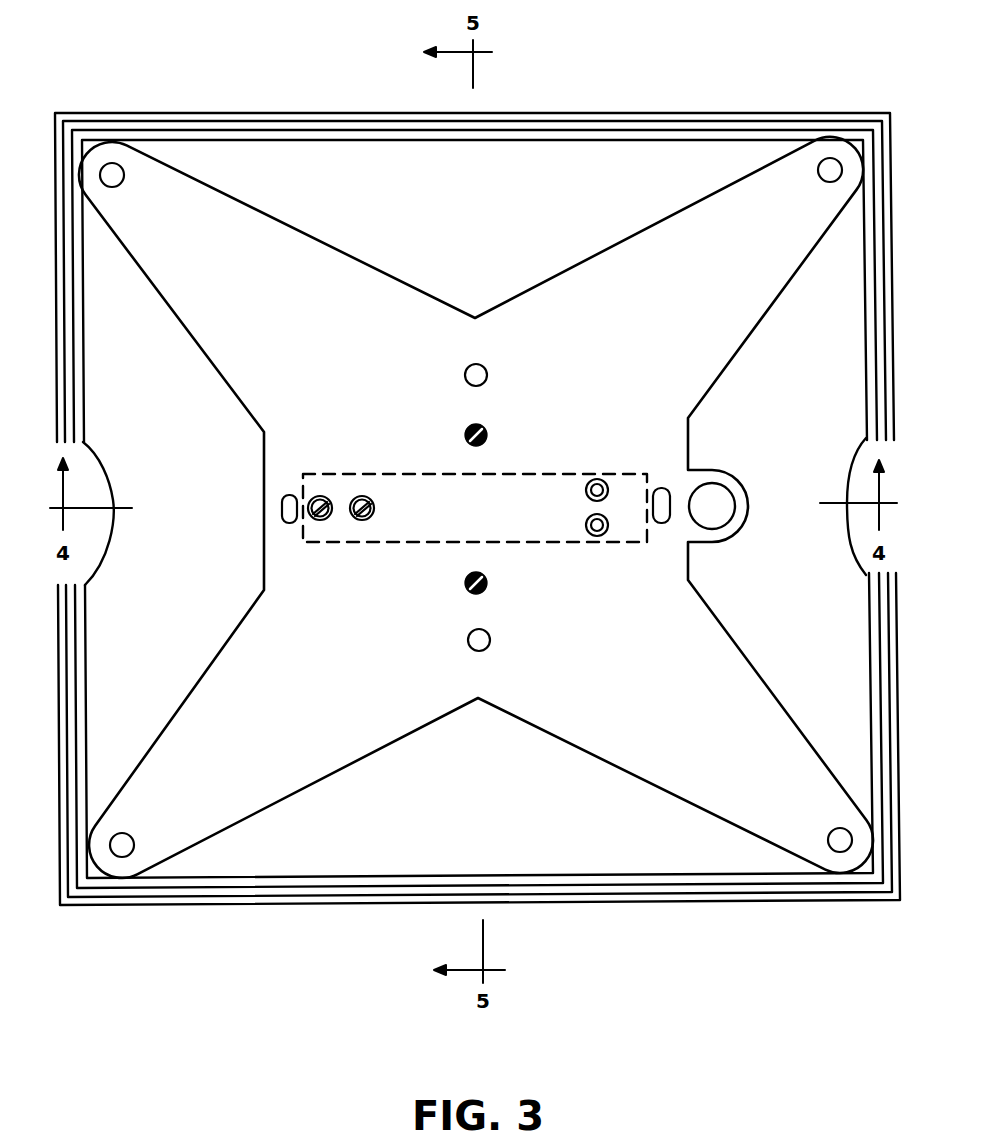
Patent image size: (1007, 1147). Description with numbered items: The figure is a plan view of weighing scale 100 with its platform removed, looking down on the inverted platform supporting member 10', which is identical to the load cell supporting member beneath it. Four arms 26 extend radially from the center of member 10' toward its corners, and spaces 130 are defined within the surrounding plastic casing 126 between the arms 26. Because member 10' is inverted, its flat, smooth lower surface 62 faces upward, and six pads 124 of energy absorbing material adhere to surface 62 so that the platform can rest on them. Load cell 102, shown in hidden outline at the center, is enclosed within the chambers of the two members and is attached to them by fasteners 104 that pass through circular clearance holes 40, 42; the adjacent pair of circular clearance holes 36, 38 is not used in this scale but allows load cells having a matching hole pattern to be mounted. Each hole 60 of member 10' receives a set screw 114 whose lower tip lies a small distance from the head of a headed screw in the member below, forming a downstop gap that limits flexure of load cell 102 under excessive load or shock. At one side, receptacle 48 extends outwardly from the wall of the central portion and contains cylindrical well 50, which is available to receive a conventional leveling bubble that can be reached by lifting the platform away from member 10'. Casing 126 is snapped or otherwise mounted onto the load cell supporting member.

The platform supporting member 10' is at (785, 386).
The arms 26 is at (282, 242).
The circular clearance hole 36 is at (598, 478).
The circular clearance hole 38 is at (600, 537).
The circular clearance hole 40 is at (328, 523).
The circular clearance hole 42 is at (375, 499).
The receptacle 48 is at (748, 512).
The cylindrical well 50 is at (722, 497).
The hole 60 is at (487, 427).
The lower surface 62 is at (643, 762).
The weighing scale 100 is at (662, 91).
The load cell 102 is at (443, 543).
The fasteners 104 is at (358, 495).
The set screw 114 is at (487, 440).
The pads 124 is at (124, 180).
The plastic casing 126 is at (783, 895).
The spaces 130 is at (453, 219).